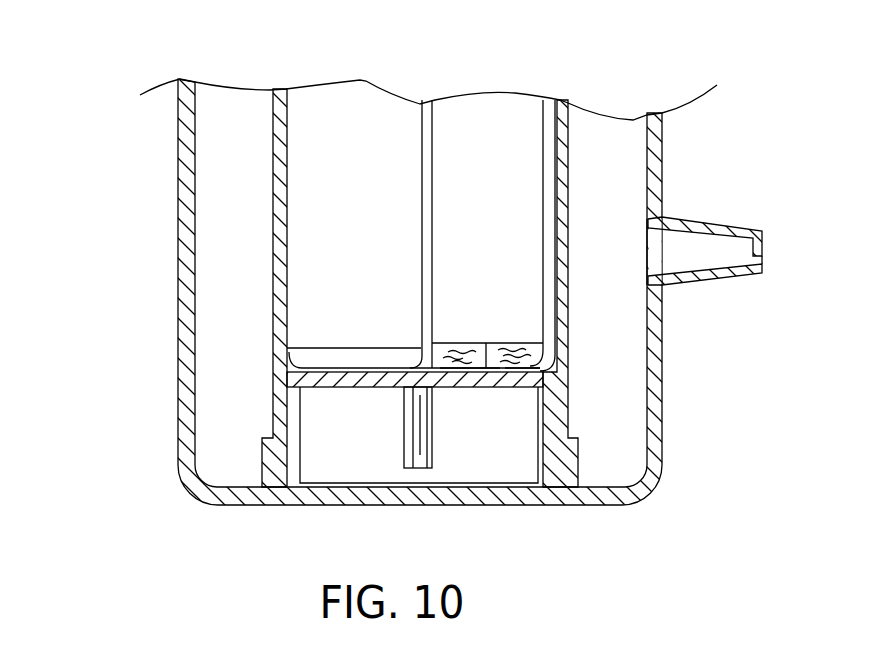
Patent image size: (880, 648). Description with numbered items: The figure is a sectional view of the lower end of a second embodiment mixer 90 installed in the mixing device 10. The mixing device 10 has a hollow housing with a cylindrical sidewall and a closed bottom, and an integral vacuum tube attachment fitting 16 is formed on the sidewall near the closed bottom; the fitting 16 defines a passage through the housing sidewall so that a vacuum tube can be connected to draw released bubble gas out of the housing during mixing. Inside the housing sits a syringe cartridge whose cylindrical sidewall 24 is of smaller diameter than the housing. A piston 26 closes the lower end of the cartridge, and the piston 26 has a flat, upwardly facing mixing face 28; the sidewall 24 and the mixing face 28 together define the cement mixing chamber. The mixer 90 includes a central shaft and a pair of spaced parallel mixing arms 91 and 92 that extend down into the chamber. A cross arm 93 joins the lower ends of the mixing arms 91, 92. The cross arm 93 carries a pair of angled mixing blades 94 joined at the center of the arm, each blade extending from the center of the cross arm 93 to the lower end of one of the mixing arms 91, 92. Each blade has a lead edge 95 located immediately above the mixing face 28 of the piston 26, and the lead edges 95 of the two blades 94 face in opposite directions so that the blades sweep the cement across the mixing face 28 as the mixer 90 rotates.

The mixing device 10 is at (136, 172).
The vacuum tube attachment fitting 16 is at (672, 288).
The sidewall 24 is at (567, 247).
The piston 26 is at (296, 352).
The mixing face 28 is at (358, 372).
The second embodiment mixer 90 is at (454, 227).
The mixing arm 91 is at (433, 185).
The mixing arm 92 is at (540, 137).
The cross arm 93 is at (473, 340).
The mixing blades 94 is at (525, 388).
The lead edge 95 is at (447, 380).